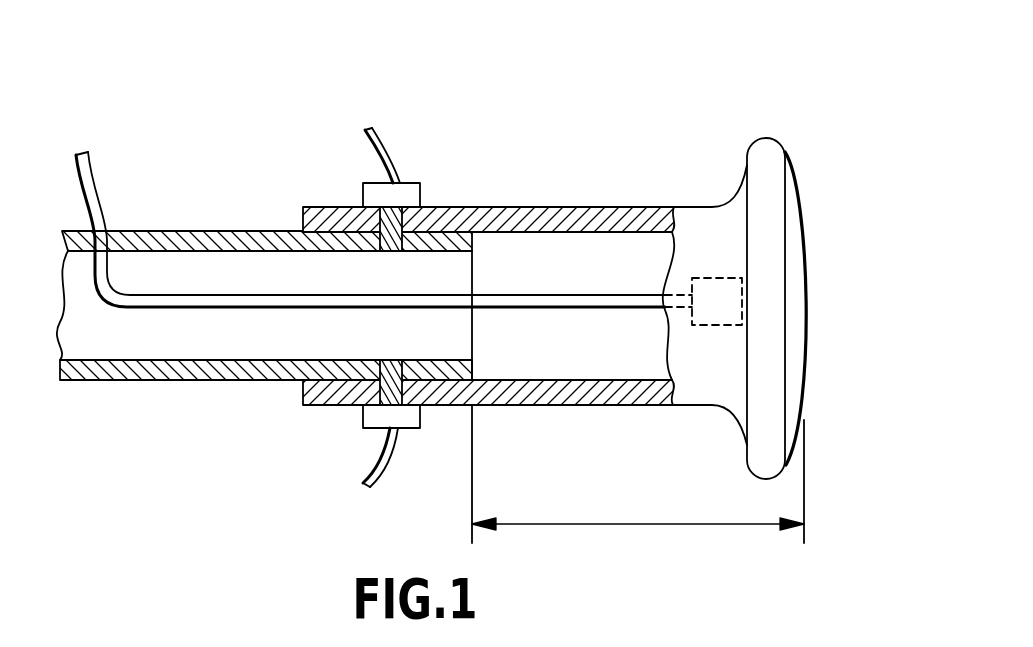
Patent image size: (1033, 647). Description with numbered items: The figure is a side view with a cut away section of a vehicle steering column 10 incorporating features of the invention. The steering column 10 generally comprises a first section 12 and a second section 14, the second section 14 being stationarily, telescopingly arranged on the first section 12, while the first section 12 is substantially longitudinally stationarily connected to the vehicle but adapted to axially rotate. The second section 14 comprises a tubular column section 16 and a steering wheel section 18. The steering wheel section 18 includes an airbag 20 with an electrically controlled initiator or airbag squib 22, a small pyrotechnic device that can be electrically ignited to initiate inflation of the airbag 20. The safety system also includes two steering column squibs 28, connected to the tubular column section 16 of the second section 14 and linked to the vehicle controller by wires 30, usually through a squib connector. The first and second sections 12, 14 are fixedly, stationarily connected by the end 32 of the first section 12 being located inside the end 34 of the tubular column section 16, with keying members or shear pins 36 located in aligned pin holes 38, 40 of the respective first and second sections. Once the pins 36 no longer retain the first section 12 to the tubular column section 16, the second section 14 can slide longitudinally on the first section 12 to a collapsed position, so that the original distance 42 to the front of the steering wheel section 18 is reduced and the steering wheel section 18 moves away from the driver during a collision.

The vehicle steering column 10 is at (155, 62).
The first section 12 is at (112, 382).
The second section 14 is at (633, 207).
The tubular column section 16 is at (563, 207).
The steering wheel section 18 is at (803, 227).
The airbag 20 is at (808, 298).
The airbag squib 22 is at (717, 278).
The steering column squib 28 is at (420, 190).
The wires 30 is at (392, 152).
The end of the first section 32 is at (473, 345).
The end of the tubular column section 34 is at (303, 216).
The shear pins 36 is at (391, 252).
The pin hole 38 is at (380, 240).
The pin hole 40 is at (388, 222).
The original distance 42 is at (615, 524).